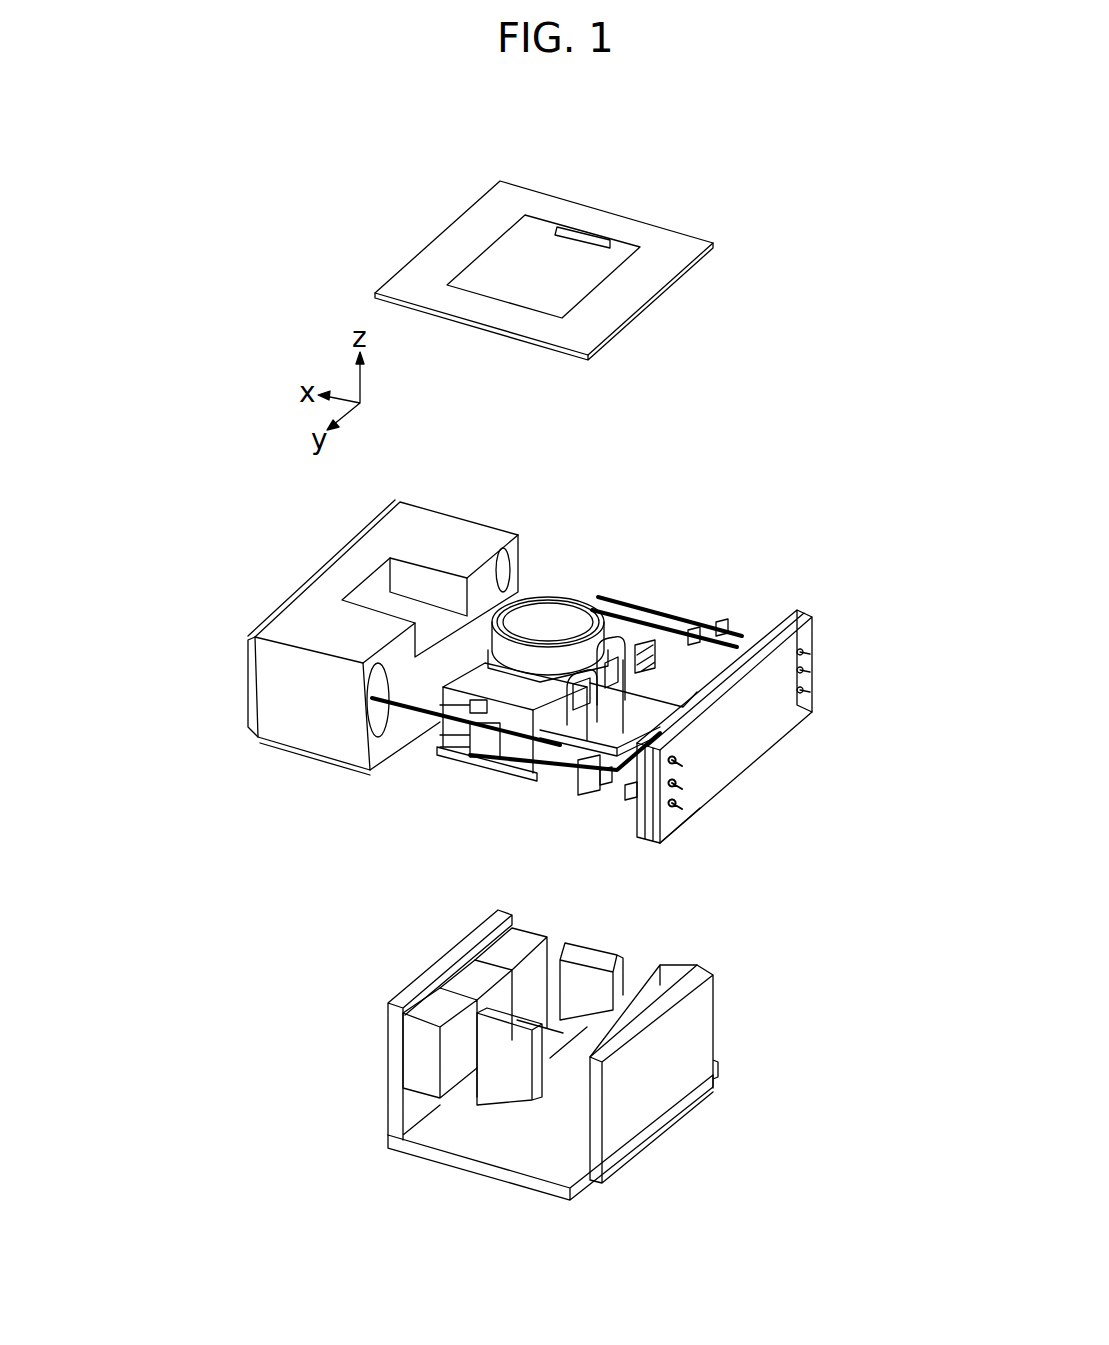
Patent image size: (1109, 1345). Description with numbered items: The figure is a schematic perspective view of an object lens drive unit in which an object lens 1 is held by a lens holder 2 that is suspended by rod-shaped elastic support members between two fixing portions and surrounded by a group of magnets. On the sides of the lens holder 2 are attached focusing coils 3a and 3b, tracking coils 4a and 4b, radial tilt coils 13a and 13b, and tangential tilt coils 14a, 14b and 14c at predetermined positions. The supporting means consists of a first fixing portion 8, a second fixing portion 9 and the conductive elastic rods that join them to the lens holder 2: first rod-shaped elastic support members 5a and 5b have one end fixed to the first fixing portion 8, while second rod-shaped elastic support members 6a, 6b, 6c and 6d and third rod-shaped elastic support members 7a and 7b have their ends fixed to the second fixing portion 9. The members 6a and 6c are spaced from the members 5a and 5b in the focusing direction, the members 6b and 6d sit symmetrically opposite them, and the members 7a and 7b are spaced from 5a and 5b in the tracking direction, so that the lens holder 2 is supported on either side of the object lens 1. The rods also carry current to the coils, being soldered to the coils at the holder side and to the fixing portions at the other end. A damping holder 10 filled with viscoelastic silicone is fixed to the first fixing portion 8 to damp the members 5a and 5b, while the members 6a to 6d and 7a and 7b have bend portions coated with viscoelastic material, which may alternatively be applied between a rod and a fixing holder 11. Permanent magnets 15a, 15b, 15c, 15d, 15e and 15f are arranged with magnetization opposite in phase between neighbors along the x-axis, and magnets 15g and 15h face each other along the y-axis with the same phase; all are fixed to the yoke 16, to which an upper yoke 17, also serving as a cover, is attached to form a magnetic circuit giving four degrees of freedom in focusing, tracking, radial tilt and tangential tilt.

The object lens 1 is at (560, 600).
The lens holder 2 is at (598, 592).
The focusing coil 3a is at (517, 747).
The focusing coil 3b is at (634, 650).
The tracking coil 4a is at (703, 792).
The tracking coil 4b is at (665, 698).
The first rod-shaped elastic support member 5a is at (432, 738).
The first rod-shaped elastic support member 5b is at (537, 620).
The second rod-shaped elastic support member 6a is at (628, 793).
The second rod-shaped elastic support member 6b is at (605, 778).
The second rod-shaped elastic support member 6c is at (723, 633).
The second rod-shaped elastic support member 6d is at (695, 637).
The third rod-shaped elastic support member 7a is at (587, 778).
The third rod-shaped elastic support member 7b is at (685, 637).
The first fixing portion 8 is at (250, 682).
The second fixing portion 9 is at (765, 718).
The damping holder 10 is at (317, 640).
The fixing holder 11 is at (810, 712).
The radial tilt coil 13a is at (540, 768).
The radial tilt coil 13b is at (680, 650).
The tangential tilt coil 14a is at (558, 778).
The tangential tilt coil 14b is at (633, 664).
The tangential tilt coil 14c is at (438, 770).
The permanent magnet 15a is at (580, 1047).
The permanent magnet 15b is at (620, 1010).
The permanent magnet 15c is at (660, 982).
The permanent magnet 15d is at (430, 1010).
The permanent magnet 15e is at (472, 978).
The permanent magnet 15f is at (513, 943).
The permanent magnet 15g is at (472, 1117).
The permanent magnet 15h is at (577, 977).
The yoke 16 is at (397, 1060).
The upper yoke 17 is at (433, 273).